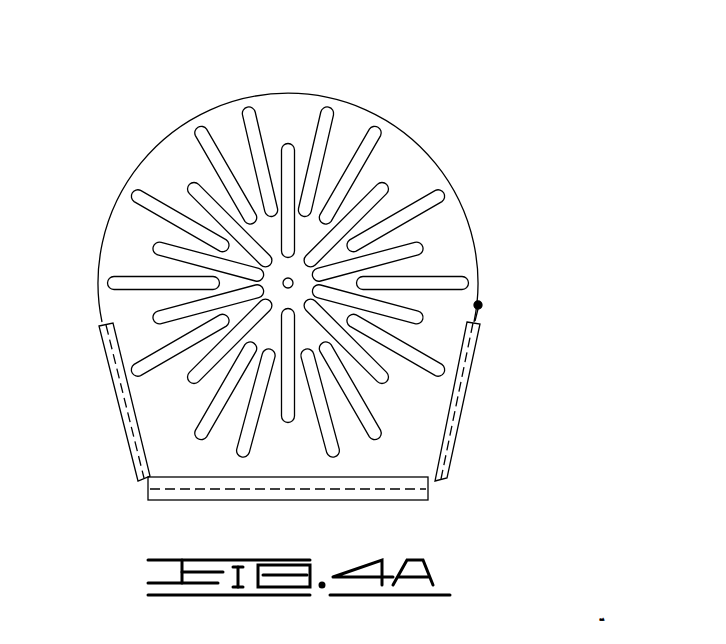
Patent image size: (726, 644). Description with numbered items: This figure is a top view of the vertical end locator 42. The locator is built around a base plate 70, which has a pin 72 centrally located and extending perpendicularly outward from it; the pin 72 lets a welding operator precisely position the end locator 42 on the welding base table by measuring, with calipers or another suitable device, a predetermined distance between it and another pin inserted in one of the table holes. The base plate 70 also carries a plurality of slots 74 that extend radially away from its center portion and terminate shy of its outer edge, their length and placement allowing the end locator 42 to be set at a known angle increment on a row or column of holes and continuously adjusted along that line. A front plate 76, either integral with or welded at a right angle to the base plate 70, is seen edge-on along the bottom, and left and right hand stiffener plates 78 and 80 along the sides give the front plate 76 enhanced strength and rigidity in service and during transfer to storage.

The base plate 70 is at (450, 223).
The pin 72 is at (292, 279).
The slots 74 is at (326, 114).
The front plate 76 is at (325, 491).
The left hand stiffener plate 78 is at (457, 415).
The right hand stiffener plate 80 is at (116, 394).
The vertical end locator 42 is at (463, 305).